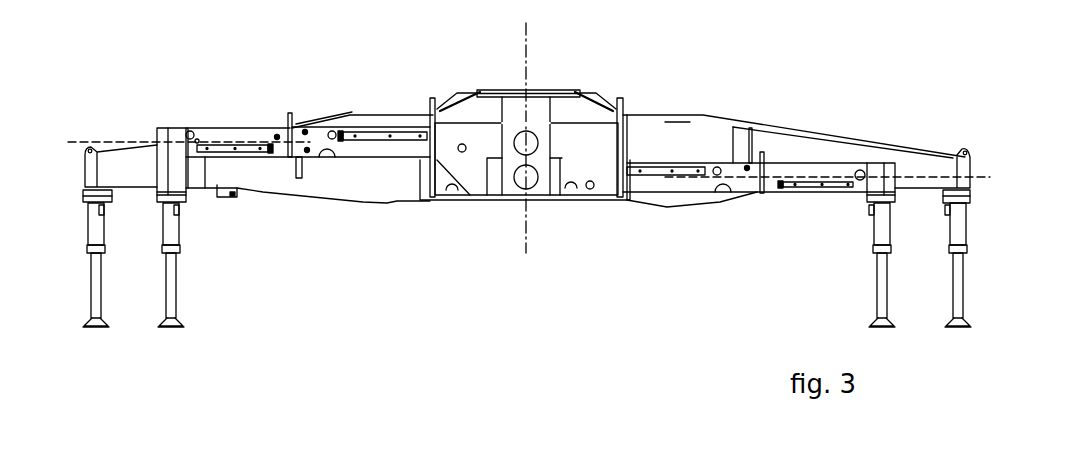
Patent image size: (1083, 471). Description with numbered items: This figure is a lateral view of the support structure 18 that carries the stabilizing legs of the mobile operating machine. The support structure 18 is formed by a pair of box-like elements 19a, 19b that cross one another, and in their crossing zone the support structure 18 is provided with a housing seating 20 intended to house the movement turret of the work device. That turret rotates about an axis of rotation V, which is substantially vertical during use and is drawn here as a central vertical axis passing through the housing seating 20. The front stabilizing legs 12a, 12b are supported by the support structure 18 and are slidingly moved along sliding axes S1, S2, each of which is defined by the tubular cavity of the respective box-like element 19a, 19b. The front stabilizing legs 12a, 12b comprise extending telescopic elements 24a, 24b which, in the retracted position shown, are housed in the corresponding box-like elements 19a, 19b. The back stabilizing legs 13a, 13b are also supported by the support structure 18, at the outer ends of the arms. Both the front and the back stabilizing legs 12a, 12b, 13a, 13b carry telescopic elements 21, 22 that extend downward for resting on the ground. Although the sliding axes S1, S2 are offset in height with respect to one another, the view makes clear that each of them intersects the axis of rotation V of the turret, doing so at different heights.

The front stabilizing leg 12a is at (269, 197).
The front stabilizing leg 12b is at (781, 197).
The back stabilizing leg 13a is at (103, 149).
The back stabilizing leg 13b is at (876, 136).
The support structure 18 is at (547, 210).
The box-like element 19a is at (437, 92).
The box-like element 19b is at (617, 92).
The housing seating 20 is at (488, 92).
The telescopic element 21 is at (172, 281).
The telescopic element 22 is at (127, 258).
The extending telescopic element 24a is at (277, 137).
The extending telescopic element 24b is at (307, 150).
The sliding axis S1 is at (138, 142).
The sliding axis S2 is at (915, 177).
The axis of rotation V is at (530, 34).